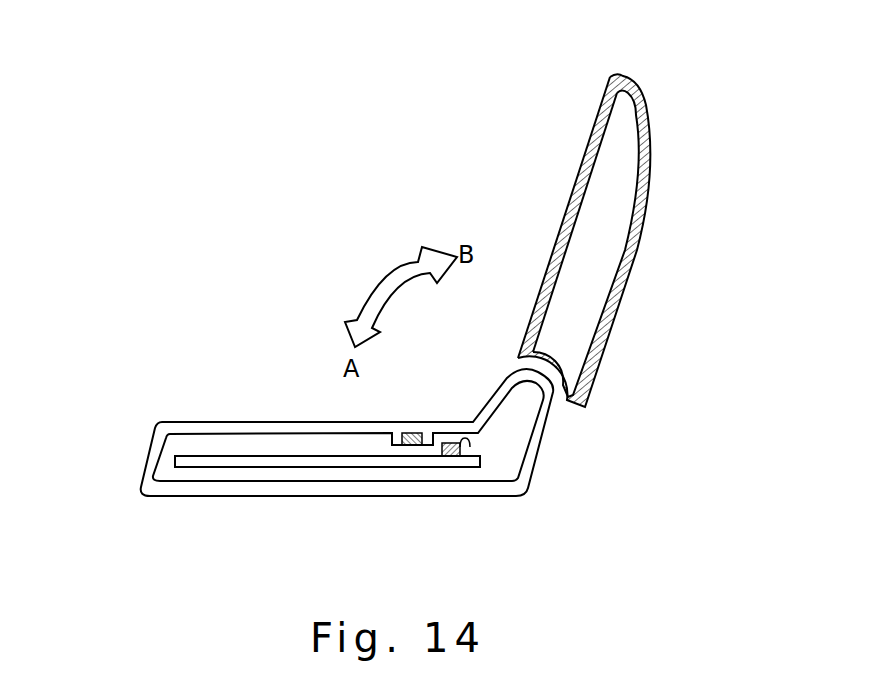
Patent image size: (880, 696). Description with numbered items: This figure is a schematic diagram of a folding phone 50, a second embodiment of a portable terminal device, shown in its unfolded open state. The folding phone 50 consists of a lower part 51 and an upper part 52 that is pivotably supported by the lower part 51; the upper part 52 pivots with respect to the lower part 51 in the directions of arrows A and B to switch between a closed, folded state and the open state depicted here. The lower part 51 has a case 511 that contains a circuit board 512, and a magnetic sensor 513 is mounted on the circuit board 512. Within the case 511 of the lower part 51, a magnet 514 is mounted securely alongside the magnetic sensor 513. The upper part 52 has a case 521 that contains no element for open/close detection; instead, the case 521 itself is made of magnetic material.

The folding phone 50 is at (690, 70).
The lower part 51 is at (140, 408).
The upper part 52 is at (570, 85).
The case 511 is at (157, 445).
The circuit board 512 is at (203, 455).
The magnetic sensor 513 is at (468, 447).
The magnet 514 is at (412, 446).
The case 521 is at (587, 147).